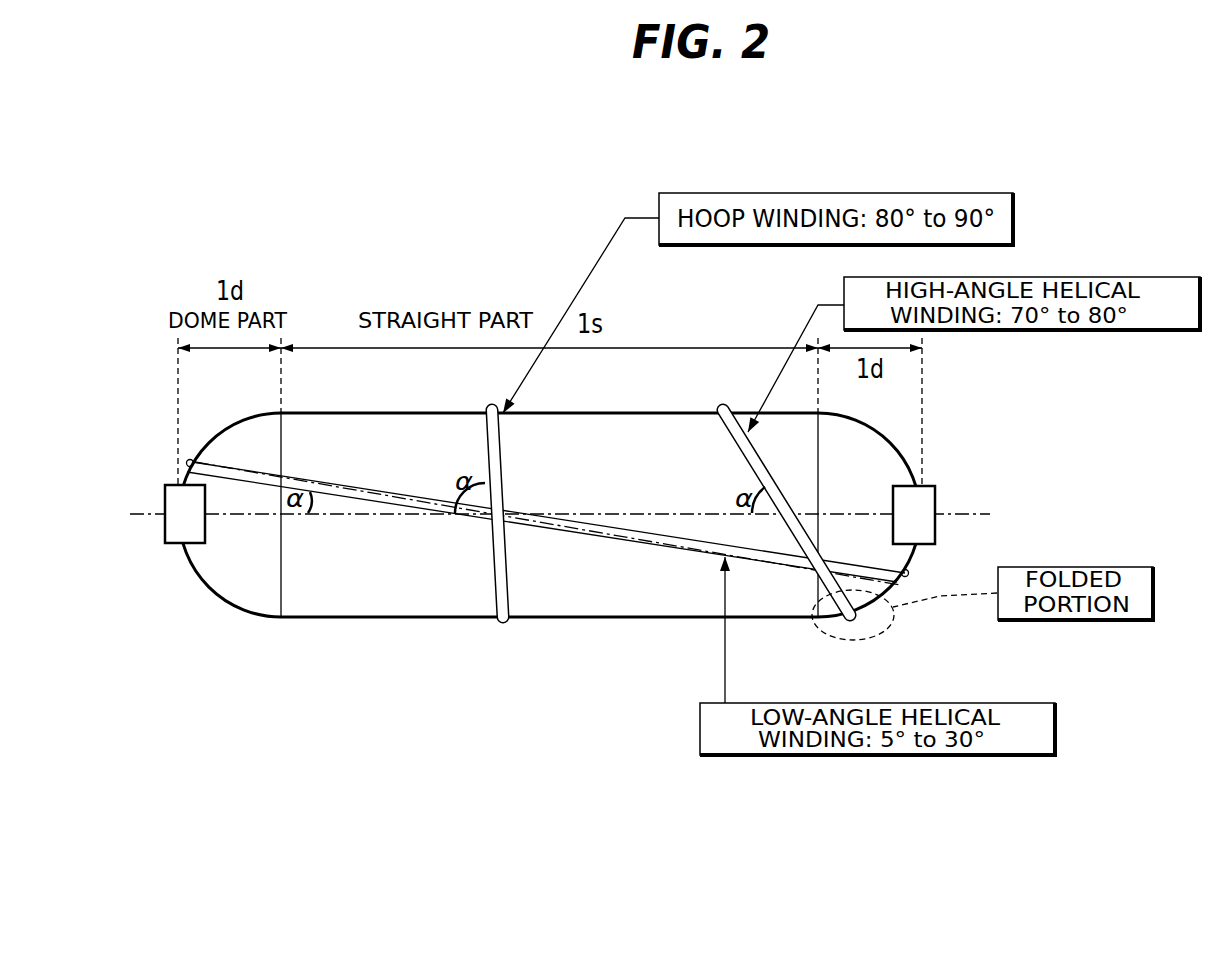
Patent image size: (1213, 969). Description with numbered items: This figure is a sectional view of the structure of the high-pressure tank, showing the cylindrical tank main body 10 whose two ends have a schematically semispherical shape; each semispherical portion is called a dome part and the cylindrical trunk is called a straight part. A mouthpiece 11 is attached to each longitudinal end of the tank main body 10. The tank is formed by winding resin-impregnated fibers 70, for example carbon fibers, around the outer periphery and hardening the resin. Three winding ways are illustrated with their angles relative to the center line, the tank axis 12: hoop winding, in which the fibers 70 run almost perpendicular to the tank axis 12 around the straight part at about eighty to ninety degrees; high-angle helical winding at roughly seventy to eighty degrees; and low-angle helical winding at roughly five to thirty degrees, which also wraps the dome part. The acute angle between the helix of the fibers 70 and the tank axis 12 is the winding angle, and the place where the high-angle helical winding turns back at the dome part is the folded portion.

The tank main body 10 is at (378, 595).
The mouthpiece 11 is at (175, 532).
The tank axis 12 is at (358, 515).
The fibers 70 is at (495, 468).